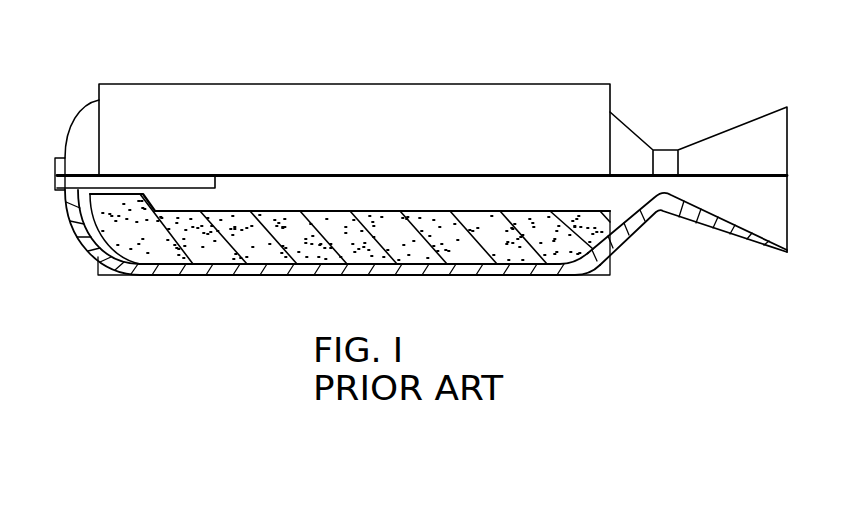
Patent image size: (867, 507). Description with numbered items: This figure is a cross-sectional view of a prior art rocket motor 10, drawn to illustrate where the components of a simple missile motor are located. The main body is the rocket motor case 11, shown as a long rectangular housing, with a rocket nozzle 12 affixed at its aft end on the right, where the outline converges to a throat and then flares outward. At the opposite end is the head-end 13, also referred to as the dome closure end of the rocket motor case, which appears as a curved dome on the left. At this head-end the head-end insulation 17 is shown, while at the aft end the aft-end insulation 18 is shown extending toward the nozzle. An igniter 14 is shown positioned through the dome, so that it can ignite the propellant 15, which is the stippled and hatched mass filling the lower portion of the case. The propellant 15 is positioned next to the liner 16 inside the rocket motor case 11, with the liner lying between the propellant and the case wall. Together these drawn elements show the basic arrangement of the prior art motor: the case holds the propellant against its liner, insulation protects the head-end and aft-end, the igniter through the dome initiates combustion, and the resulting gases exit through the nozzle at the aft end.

The rocket motor 10 is at (288, 72).
The rocket motor case 11 is at (490, 84).
The rocket nozzle 12 is at (748, 122).
The head-end 13 is at (83, 118).
The igniter 14 is at (72, 217).
The propellant 15 is at (258, 253).
The liner 16 is at (366, 260).
The head-end insulation 17 is at (90, 228).
The aft-end insulation 18 is at (617, 240).